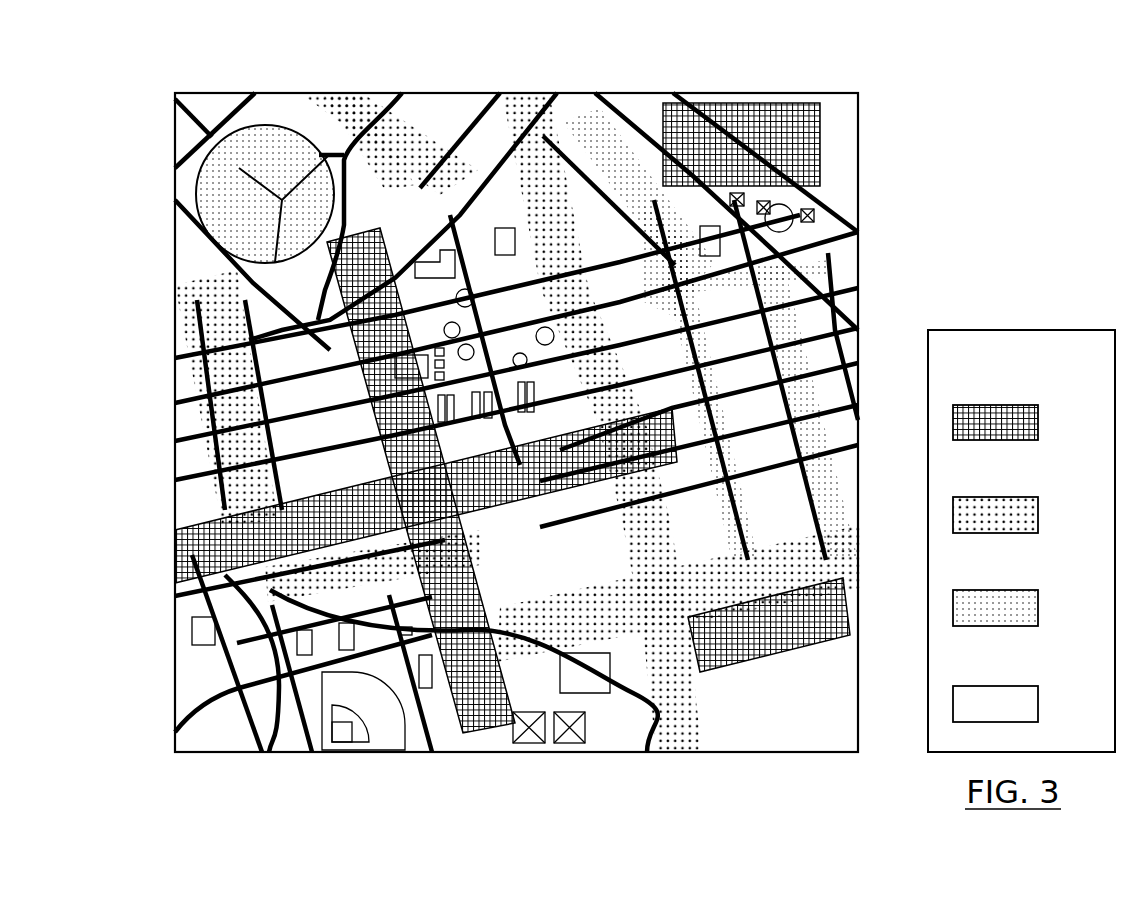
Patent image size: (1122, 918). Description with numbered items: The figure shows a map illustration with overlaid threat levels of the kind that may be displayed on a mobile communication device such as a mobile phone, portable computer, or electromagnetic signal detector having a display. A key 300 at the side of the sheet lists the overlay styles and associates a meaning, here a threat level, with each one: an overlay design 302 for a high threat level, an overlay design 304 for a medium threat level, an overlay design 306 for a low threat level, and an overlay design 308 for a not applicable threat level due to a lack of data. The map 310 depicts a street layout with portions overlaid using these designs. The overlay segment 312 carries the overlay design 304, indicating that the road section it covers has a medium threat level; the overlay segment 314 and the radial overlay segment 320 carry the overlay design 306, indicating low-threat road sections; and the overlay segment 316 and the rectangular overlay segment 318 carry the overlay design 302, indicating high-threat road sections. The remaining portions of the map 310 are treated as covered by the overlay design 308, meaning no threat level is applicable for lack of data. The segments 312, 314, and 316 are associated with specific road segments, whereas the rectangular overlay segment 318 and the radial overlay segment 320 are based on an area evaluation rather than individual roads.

The key 300 is at (1021, 510).
The overlay design 302 is at (1038, 425).
The overlay design 304 is at (1038, 518).
The overlay design 306 is at (1038, 611).
The overlay design 308 is at (1038, 703).
The map 310 is at (507, 421).
The overlay segment 312 is at (717, 738).
The overlay segment 314 is at (600, 140).
The overlay segment 316 is at (487, 728).
The rectangular overlay segment 318 is at (828, 125).
The radial overlay segment 320 is at (195, 183).